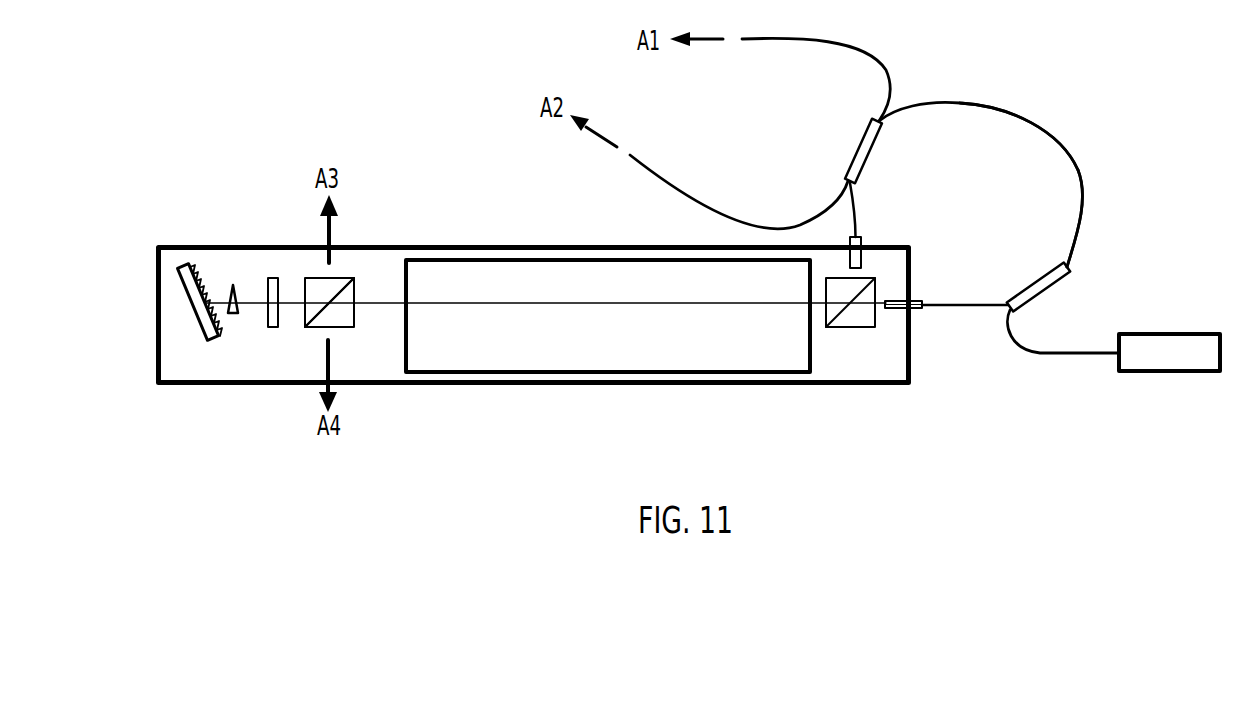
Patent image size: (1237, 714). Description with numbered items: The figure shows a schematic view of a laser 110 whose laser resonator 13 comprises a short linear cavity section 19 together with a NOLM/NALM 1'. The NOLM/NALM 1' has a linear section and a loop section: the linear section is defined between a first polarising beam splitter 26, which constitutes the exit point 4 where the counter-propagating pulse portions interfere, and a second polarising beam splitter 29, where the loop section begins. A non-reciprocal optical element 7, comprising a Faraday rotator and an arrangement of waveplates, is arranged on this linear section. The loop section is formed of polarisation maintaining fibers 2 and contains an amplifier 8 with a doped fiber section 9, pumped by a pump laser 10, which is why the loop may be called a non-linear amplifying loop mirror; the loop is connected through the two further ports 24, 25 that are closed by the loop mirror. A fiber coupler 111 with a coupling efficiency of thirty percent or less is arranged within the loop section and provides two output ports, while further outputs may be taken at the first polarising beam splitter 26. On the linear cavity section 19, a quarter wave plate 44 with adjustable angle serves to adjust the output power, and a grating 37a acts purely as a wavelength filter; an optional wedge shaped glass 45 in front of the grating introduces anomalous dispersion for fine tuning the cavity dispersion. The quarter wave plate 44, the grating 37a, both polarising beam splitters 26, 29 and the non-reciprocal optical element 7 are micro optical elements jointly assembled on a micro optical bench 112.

The laser 110 is at (221, 83).
The laser resonator 13 is at (501, 234).
The non-reciprocal optical element 7 is at (775, 375).
The micro optical bench 112 is at (524, 385).
The linear cavity section 19 is at (254, 303).
The grating 37a is at (193, 318).
The wedge shaped glass 45 is at (229, 298).
The quarter wave plate 44 is at (274, 328).
The exit point 4 is at (355, 260).
The first polarising beam splitter 26 is at (352, 328).
The second polarising beam splitter 29 is at (850, 328).
The port 24 is at (861, 240).
The port 25 is at (920, 309).
The fibers 2 is at (986, 303).
The doped fiber section 9 is at (1080, 172).
The amplifier 8 is at (1116, 230).
The NOLM/NALM 1' is at (1028, 126).
The fiber coupler 111 is at (856, 150).
The pump laser 10 is at (1188, 375).